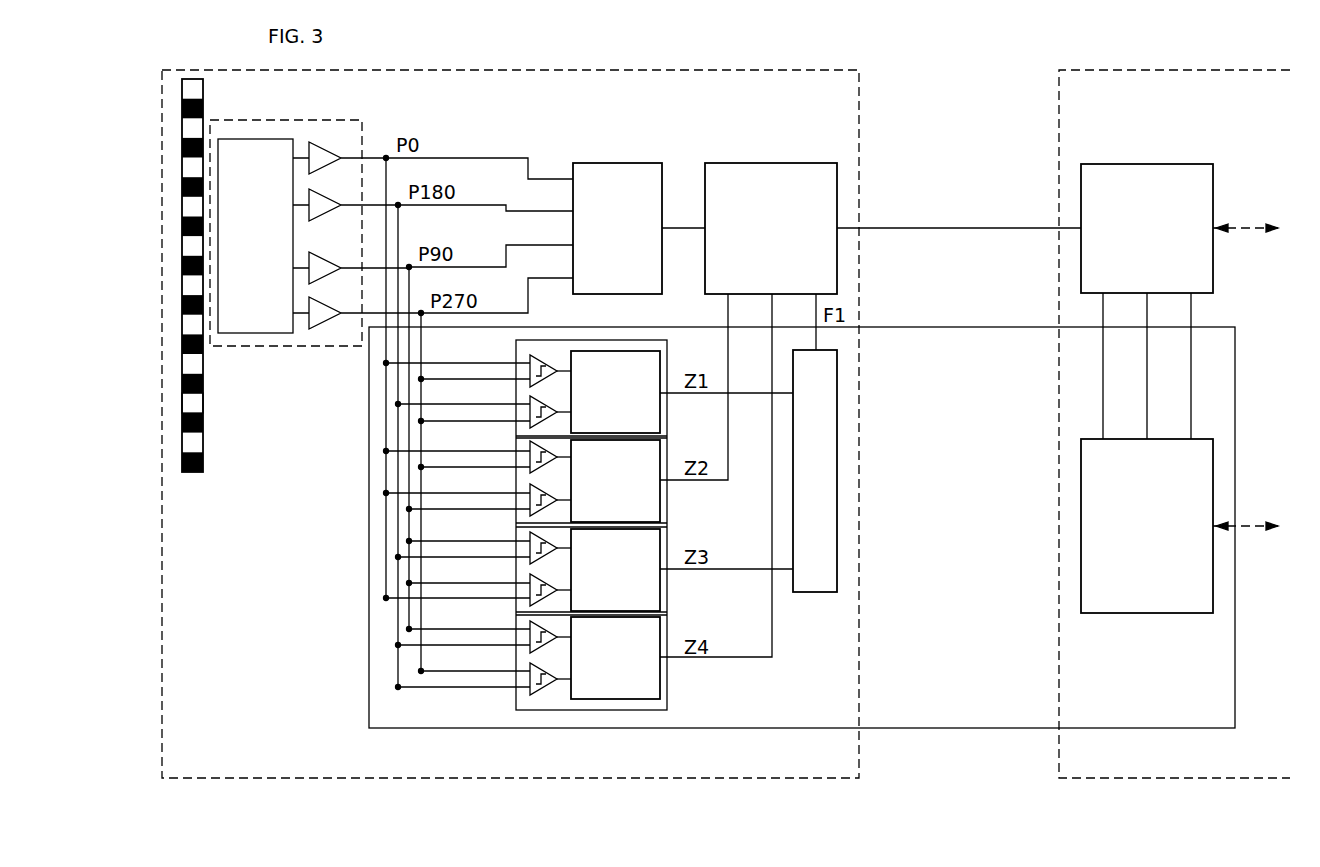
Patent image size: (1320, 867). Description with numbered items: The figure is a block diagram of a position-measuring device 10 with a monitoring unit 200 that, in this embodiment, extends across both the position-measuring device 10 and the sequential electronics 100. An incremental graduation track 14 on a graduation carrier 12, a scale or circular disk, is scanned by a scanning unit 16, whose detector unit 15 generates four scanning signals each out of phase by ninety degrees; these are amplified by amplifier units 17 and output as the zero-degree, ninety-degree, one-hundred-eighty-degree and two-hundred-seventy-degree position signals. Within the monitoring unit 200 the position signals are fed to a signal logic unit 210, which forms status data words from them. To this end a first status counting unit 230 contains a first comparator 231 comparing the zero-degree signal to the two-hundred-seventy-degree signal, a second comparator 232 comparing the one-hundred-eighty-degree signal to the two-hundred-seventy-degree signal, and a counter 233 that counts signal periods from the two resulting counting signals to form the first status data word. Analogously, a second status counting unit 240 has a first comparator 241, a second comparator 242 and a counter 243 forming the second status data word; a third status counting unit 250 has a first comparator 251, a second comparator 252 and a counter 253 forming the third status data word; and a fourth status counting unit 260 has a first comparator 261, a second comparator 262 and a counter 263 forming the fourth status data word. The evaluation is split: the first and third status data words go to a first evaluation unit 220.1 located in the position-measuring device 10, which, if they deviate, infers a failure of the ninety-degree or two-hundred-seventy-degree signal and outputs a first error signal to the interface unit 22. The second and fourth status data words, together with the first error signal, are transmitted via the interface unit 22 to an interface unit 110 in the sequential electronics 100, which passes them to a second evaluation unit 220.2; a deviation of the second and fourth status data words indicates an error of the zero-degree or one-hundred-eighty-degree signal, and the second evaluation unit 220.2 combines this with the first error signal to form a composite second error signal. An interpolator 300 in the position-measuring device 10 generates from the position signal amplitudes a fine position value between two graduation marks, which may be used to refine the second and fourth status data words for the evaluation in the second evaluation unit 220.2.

The position-measuring device 10 is at (838, 766).
The sequential electronics 100 is at (1059, 760).
The graduation carrier 12 is at (190, 475).
The incremental graduation track 14 is at (192, 400).
The detector unit 15 is at (228, 328).
The scanning unit 16 is at (283, 340).
The amplifier units 17 is at (319, 325).
The interface unit 22 is at (764, 170).
The interpolator 300 is at (612, 170).
The interface unit 110 is at (1138, 168).
The monitoring unit 200 is at (471, 716).
The signal logic unit 210 is at (552, 556).
The first evaluation unit 220.1 is at (823, 492).
The second evaluation unit 220.2 is at (1163, 603).
The first status counting unit 230 is at (552, 387).
The first comparator 231 is at (530, 362).
The second comparator 232 is at (530, 403).
The counter 233 is at (655, 415).
The second status counting unit 240 is at (552, 474).
The first comparator 241 is at (530, 448).
The second comparator 242 is at (530, 491).
The counter 243 is at (655, 505).
The third status counting unit 250 is at (552, 564).
The first comparator 251 is at (530, 539).
The second comparator 252 is at (530, 581).
The counter 253 is at (655, 592).
The fourth status counting unit 260 is at (558, 650).
The first comparator 261 is at (530, 628).
The second comparator 262 is at (530, 670).
The counter 263 is at (655, 680).